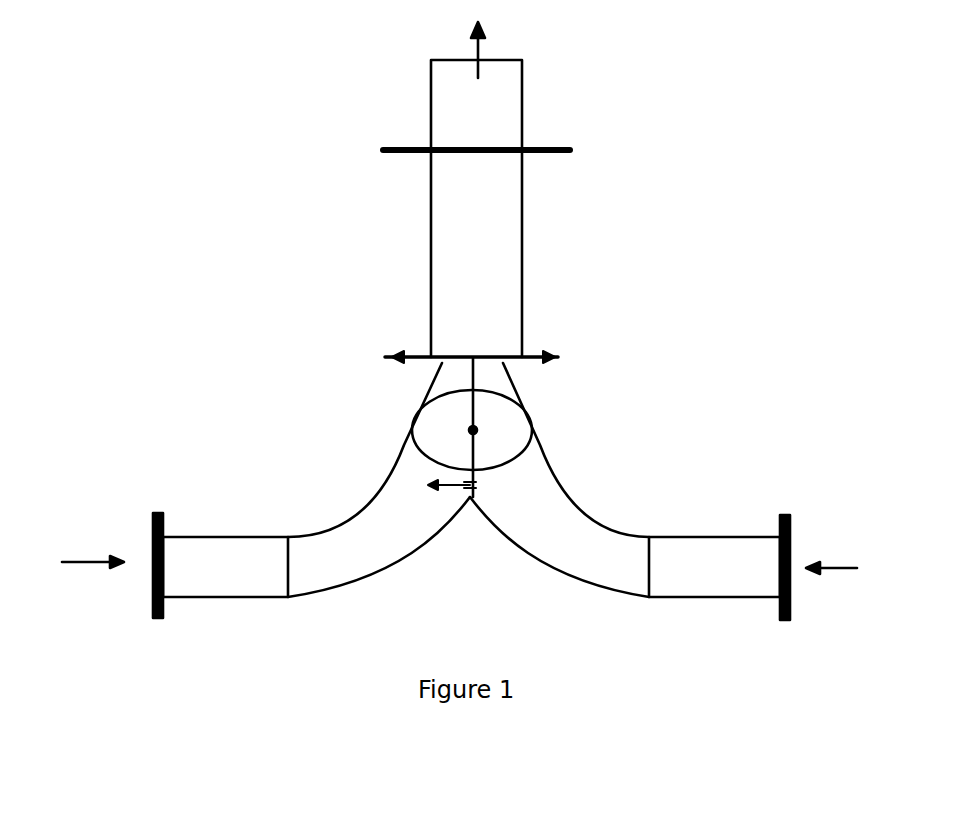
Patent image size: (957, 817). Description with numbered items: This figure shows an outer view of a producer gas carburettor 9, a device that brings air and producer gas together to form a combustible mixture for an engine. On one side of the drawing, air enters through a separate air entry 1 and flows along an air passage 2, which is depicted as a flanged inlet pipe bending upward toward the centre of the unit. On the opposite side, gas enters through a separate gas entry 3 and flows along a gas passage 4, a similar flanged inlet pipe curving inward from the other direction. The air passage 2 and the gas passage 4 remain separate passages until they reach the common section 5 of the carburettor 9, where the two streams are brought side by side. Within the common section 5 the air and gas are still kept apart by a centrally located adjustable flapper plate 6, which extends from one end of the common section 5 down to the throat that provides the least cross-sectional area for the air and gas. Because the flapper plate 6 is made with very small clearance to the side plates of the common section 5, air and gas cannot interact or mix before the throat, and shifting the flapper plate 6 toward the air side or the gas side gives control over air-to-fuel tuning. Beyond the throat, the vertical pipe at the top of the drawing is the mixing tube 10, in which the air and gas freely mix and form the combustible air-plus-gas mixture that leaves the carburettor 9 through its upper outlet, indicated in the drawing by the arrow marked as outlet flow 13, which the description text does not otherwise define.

The air entry 1 is at (833, 567).
The air passage 2 is at (753, 560).
The gas entry 3 is at (86, 560).
The gas passage 4 is at (187, 565).
The common section 5 is at (460, 357).
The flapper plate 6 is at (471, 357).
The carburettor 9 is at (549, 423).
The mixing tube 10 is at (470, 183).
The outlet gas flow 13 is at (480, 46).